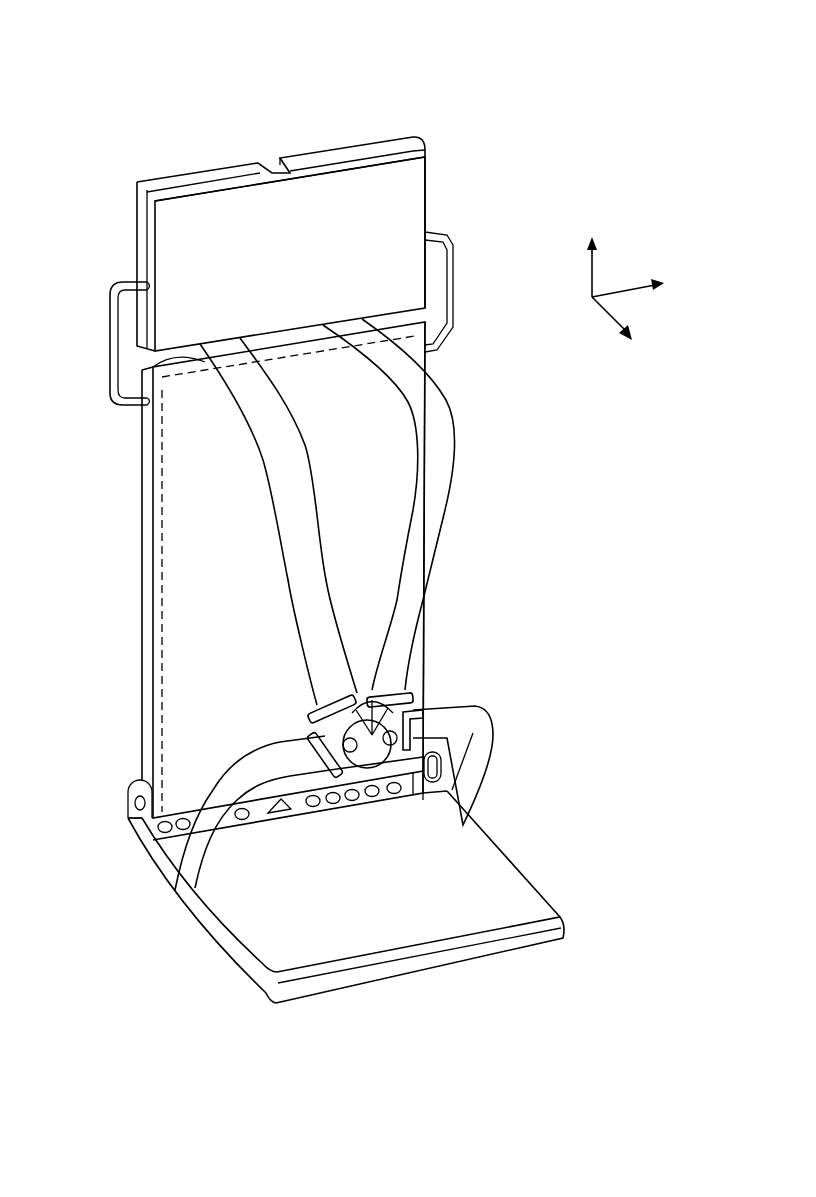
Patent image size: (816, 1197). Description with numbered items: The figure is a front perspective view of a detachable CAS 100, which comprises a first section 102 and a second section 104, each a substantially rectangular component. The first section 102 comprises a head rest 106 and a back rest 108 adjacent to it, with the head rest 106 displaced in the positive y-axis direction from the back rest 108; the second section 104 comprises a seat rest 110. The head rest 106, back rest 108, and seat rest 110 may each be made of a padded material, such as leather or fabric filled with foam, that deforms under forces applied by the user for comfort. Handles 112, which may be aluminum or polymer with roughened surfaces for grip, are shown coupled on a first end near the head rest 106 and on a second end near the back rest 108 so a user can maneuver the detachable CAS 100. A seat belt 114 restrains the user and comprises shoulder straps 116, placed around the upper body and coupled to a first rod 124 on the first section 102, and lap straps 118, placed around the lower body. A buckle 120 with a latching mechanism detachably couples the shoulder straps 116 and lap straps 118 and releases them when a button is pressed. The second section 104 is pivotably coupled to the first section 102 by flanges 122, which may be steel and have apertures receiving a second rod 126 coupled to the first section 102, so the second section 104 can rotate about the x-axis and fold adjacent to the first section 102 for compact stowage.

The detachable CAS 100 is at (104, 68).
The first section 102 is at (427, 173).
The second section 104 is at (530, 880).
The head rest 106 is at (290, 254).
The back rest 108 is at (300, 581).
The seat rest 110 is at (226, 861).
The handles 112 is at (127, 283).
The seat belt 114 is at (443, 440).
The shoulder straps 116 is at (425, 573).
The lap straps 118 is at (463, 722).
The buckle 120 is at (363, 757).
The flanges 122 is at (138, 815).
The first rod 124 is at (140, 383).
The second rod 126 is at (136, 800).